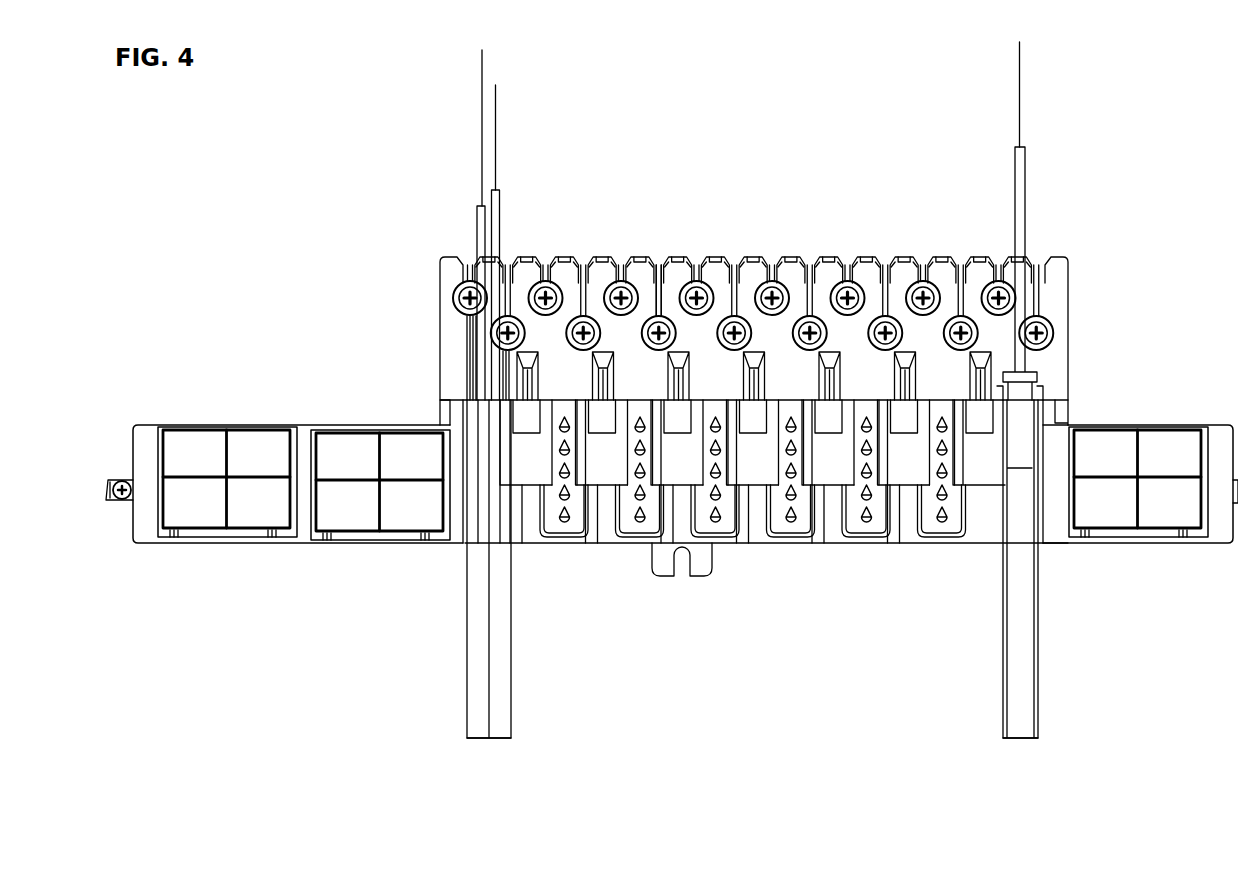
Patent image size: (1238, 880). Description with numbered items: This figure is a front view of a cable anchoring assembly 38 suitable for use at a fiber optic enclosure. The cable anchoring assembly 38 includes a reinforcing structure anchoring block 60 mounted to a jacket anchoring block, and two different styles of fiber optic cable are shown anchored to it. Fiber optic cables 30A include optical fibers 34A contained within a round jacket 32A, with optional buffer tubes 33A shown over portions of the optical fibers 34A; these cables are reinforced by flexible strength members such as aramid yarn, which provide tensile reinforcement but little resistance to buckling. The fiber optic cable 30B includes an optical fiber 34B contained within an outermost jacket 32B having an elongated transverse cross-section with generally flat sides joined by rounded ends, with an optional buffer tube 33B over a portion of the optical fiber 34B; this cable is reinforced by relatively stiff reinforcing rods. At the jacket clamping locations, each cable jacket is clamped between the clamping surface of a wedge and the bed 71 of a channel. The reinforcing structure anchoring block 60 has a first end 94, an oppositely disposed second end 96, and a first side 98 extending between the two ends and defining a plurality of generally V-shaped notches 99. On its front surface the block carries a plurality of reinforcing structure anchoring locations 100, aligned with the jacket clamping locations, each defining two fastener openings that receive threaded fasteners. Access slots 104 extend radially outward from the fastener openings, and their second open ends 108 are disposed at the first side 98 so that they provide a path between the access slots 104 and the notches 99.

The fiber optic cable 30A is at (467, 669).
The fiber optic cable 30B is at (1040, 663).
The round jacket 32A is at (467, 720).
The outermost jacket 32B is at (1040, 718).
The buffer tube 33A is at (500, 218).
The buffer tube 33B is at (1026, 176).
The optical fiber 34A is at (497, 118).
The optical fiber 34B is at (1021, 71).
The cable anchoring assembly 38 is at (378, 271).
The reinforcing structure anchoring block 60 is at (1115, 272).
The bed 71 is at (582, 518).
The first end 94 is at (440, 326).
The second end 96 is at (1072, 334).
The first side 98 is at (790, 258).
The notch 99 is at (847, 260).
The reinforcing structure anchoring location 100 is at (883, 374).
The access slot 104 is at (667, 283).
The second open end 108 is at (621, 272).